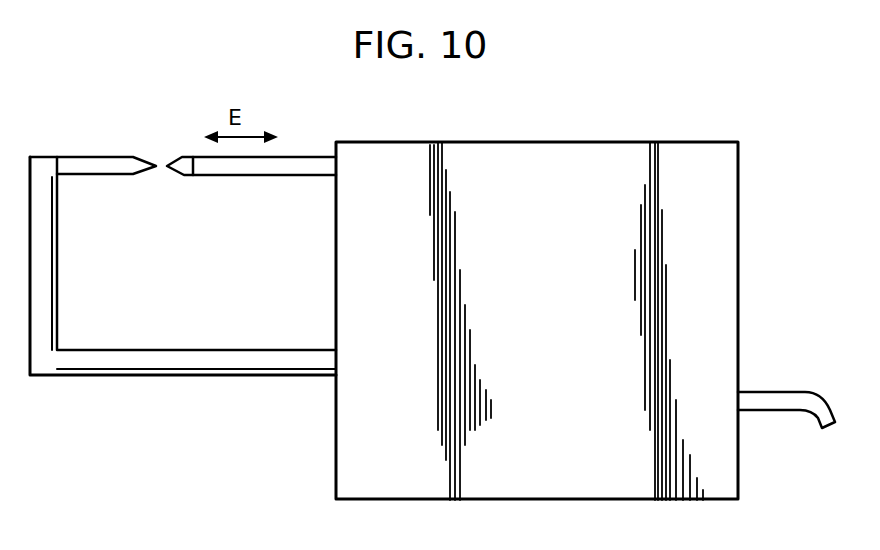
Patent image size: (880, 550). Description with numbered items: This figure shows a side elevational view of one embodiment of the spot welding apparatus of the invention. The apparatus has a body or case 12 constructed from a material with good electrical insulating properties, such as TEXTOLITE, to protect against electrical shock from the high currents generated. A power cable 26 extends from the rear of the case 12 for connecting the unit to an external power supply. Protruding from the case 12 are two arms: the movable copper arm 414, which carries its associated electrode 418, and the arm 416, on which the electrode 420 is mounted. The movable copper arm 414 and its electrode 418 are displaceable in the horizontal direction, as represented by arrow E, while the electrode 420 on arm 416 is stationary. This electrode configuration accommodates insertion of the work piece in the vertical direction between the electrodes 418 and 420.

The case 12 is at (680, 141).
The power cable 26 is at (795, 412).
The movable copper arm 414 is at (293, 156).
The arm 416 is at (213, 350).
The electrode 418 is at (187, 156).
The electrode 420 is at (78, 157).